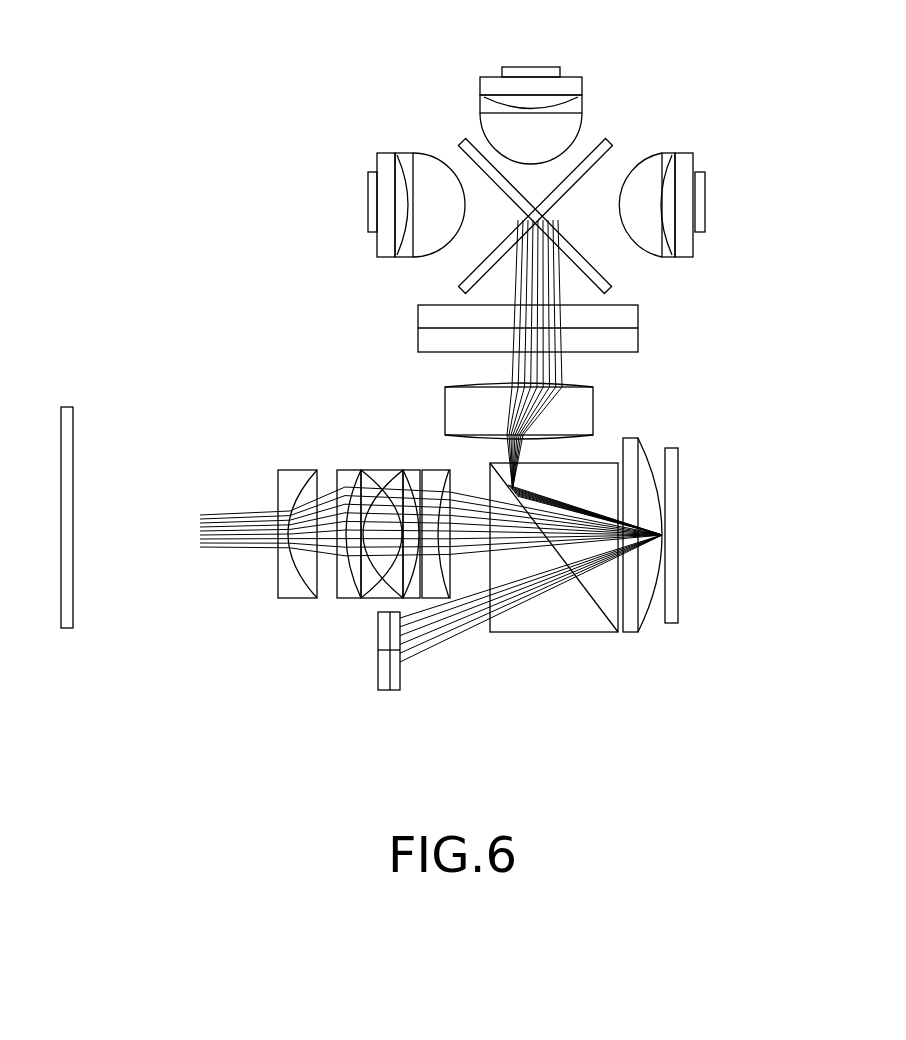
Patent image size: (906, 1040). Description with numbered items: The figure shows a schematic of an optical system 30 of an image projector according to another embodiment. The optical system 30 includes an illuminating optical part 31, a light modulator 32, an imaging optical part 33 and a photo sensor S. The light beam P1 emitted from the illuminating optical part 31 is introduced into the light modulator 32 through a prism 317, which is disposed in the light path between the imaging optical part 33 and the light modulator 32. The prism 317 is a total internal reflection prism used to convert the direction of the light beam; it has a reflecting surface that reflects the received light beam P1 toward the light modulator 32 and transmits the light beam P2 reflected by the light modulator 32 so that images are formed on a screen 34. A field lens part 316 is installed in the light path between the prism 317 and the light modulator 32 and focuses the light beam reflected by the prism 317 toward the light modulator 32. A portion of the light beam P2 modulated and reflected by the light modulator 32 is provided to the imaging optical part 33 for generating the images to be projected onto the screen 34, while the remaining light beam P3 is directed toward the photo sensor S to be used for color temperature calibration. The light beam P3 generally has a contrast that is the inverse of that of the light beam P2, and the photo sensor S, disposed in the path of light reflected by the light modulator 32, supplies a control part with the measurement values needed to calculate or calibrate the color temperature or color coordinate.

The optical system 30 is at (215, 115).
The illuminating optical part 31 is at (735, 427).
The light modulator 32 is at (679, 535).
The imaging optical part 33 is at (448, 457).
The screen 34 is at (65, 407).
The field lens part 316 is at (627, 633).
The prism 317 is at (567, 623).
The light beam P1 is at (512, 372).
The light beam P2 is at (233, 513).
The light beam P3 is at (440, 640).
The photo sensor S is at (378, 628).